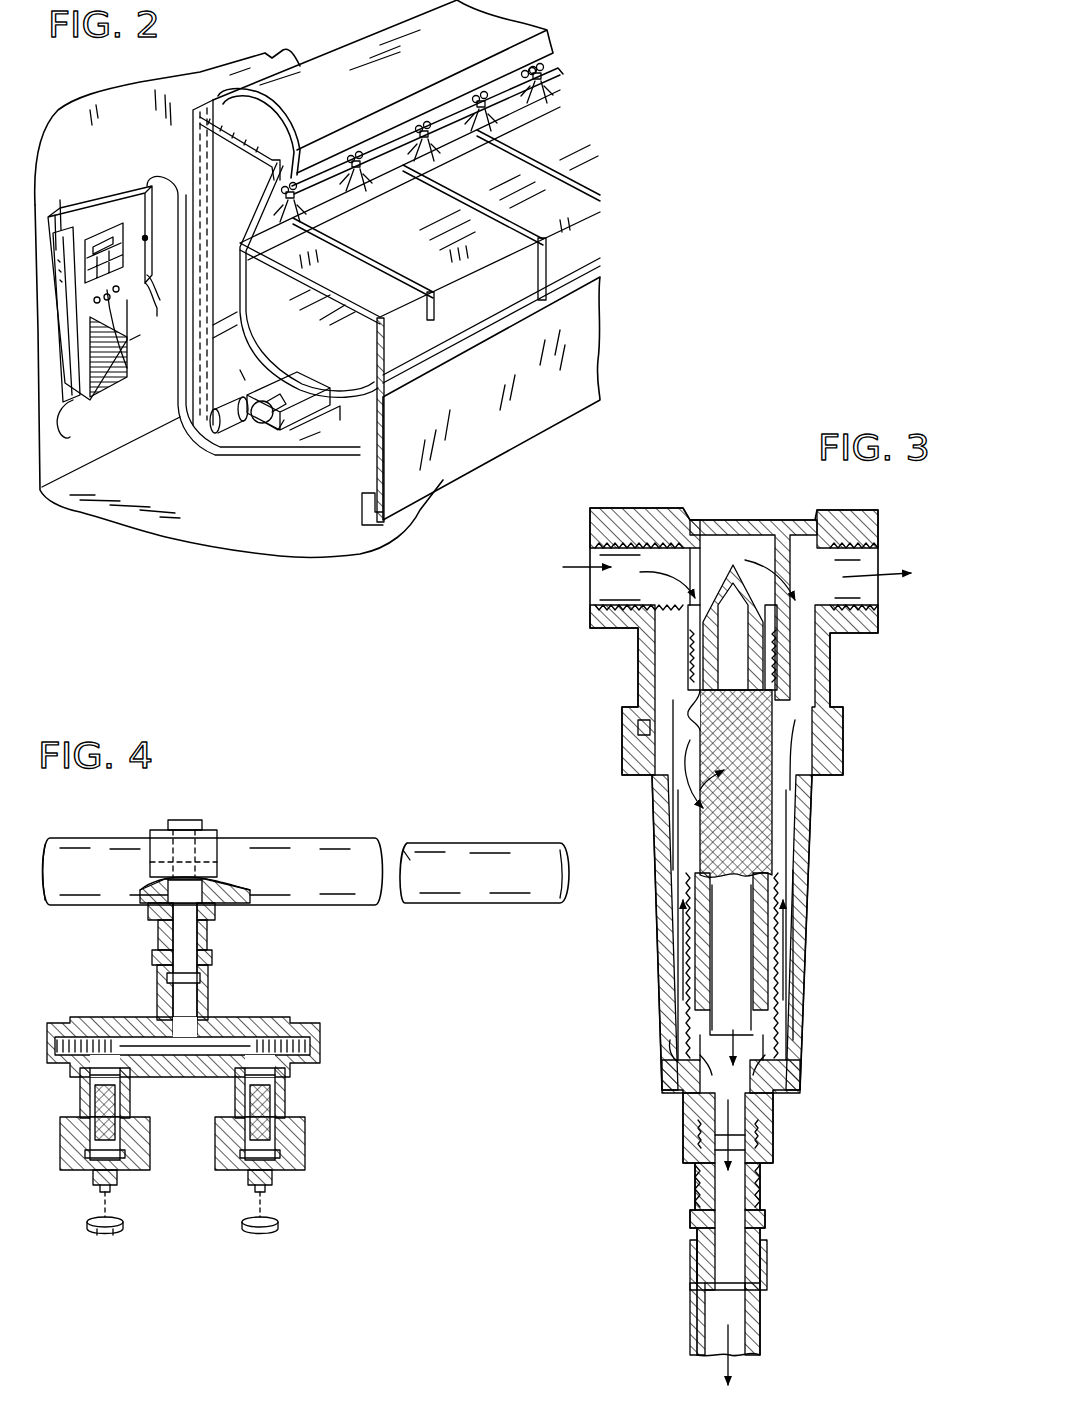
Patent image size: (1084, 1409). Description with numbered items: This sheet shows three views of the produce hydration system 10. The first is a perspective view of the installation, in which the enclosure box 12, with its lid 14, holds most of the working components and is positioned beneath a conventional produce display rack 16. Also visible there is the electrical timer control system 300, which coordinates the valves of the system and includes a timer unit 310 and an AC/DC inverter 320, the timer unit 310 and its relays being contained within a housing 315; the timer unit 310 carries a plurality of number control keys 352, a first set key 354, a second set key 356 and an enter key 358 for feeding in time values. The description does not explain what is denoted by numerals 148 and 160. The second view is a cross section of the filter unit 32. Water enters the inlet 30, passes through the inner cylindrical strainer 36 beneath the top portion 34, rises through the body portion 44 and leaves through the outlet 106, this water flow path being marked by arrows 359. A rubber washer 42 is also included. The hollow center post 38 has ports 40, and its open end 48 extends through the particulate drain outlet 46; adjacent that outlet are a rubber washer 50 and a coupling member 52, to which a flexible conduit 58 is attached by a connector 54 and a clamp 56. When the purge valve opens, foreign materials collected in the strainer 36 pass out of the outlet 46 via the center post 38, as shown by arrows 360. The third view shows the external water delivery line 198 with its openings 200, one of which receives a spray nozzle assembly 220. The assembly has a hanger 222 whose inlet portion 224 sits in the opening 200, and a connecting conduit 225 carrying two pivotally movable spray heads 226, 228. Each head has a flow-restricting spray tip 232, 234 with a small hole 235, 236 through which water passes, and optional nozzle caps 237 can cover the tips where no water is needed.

In FIG. 2, the produce hydration system 10 is at (203, 508).
In FIG. 2, the enclosure box 12 is at (315, 440).
In FIG. 2, the lid 14 is at (290, 445).
In FIG. 2, the produce display rack 16 is at (458, 418).
In FIG. 2, the pump 148 is at (230, 430).
In FIG. 2, the pump motor 160 is at (212, 433).
In FIG. 2, the external water delivery line 198 is at (388, 145).
In FIG. 4, the external water delivery line 198 is at (306, 838).
In FIG. 4, the openings 200 is at (494, 905).
In FIG. 2, the spray nozzle assembly 220 is at (556, 66).
In FIG. 4, the spray nozzle assembly 220 is at (156, 1015).
In FIG. 4, the hanger 222 is at (214, 831).
In FIG. 4, the inlet portion 224 is at (168, 887).
In FIG. 4, the connecting conduit 225 is at (210, 1003).
In FIG. 2, the spray head 226 is at (548, 75).
In FIG. 4, the spray head 226 is at (62, 1150).
In FIG. 2, the spray head 228 is at (522, 95).
In FIG. 4, the spray head 228 is at (303, 1155).
In FIG. 4, the spray tip 232 is at (120, 1180).
In FIG. 4, the spray tip 234 is at (250, 1183).
In FIG. 4, the hole 235 is at (100, 1190).
In FIG. 4, the hole 236 is at (255, 1190).
In FIG. 4, the nozzle caps 237 is at (100, 1234).
In FIG. 2, the electrical timer control system 300 is at (78, 198).
In FIG. 2, the timer unit 310 is at (107, 233).
In FIG. 2, the housing 315 is at (131, 178).
In FIG. 2, the AC/DC inverter 320 is at (127, 368).
In FIG. 2, the number control keys 352 is at (80, 232).
In FIG. 2, the Set 1 key 354 is at (95, 405).
In FIG. 2, the Set 2 key 356 is at (97, 397).
In FIG. 2, the enter key 358 is at (125, 320).
In FIG. 3, the inlet 30 is at (597, 556).
In FIG. 3, the filter unit 32 is at (739, 500).
In FIG. 3, the top portion 34 is at (668, 512).
In FIG. 3, the inner cylindrical strainer 36 is at (692, 706).
In FIG. 3, the hollow center post 38 is at (762, 930).
In FIG. 3, the ports 40 is at (762, 1050).
In FIG. 3, the rubber washer 42 is at (645, 732).
In FIG. 3, the body portion 44 is at (812, 830).
In FIG. 3, the particulate drain outlet 46 is at (680, 1096).
In FIG. 3, the end 48 is at (692, 1130).
In FIG. 3, the rubber washer 50 is at (773, 1106).
In FIG. 3, the coupling member 52 is at (692, 1160).
In FIG. 3, the connector 54 is at (690, 1220).
In FIG. 3, the clamp 56 is at (690, 1265).
In FIG. 3, the flexible conduit 58 is at (690, 1333).
In FIG. 3, the outlet 106 is at (866, 558).
In FIG. 3, the arrows 359 is at (582, 571).
In FIG. 3, the arrows 360 is at (692, 1052).